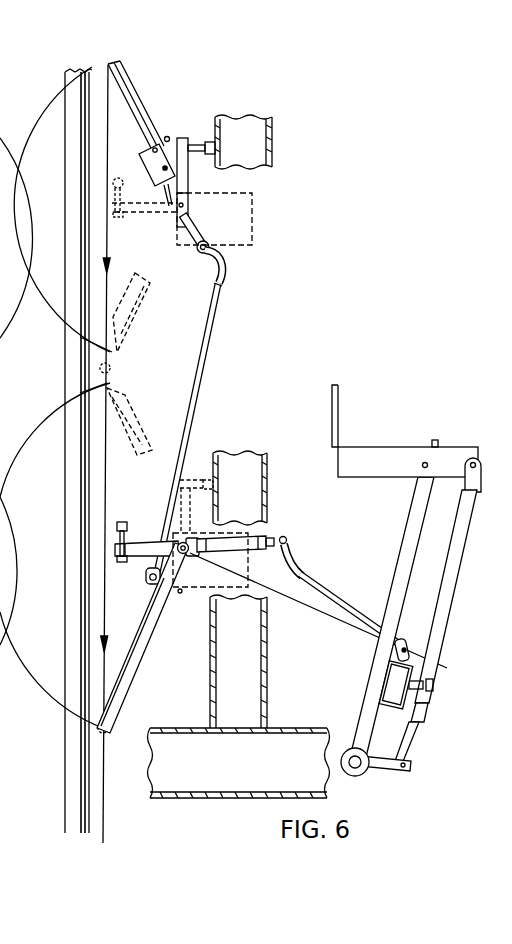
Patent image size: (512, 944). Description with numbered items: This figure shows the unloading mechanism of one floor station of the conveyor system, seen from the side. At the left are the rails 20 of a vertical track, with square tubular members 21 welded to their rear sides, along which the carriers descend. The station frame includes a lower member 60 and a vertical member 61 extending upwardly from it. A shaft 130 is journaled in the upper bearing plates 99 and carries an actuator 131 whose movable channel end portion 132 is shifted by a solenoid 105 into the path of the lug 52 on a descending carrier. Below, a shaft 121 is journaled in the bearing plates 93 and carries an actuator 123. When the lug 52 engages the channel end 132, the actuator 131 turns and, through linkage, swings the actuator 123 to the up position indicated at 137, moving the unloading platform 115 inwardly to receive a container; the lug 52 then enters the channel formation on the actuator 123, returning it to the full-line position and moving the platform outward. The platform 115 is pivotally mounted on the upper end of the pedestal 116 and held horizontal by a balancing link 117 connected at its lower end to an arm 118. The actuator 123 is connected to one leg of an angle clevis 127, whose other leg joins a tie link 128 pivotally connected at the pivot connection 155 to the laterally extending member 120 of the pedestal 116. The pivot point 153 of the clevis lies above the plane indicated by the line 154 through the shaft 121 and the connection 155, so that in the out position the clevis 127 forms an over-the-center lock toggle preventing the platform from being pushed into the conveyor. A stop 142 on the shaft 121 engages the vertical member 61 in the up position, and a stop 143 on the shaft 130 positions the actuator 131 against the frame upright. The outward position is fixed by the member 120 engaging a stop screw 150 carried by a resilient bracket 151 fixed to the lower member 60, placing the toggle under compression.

The rails 20 is at (82, 677).
The square tubular members 21 is at (77, 129).
The lug 52 is at (110, 372).
The lower member 60 is at (226, 776).
The vertical member 61 is at (227, 149).
The bearing plates 93 is at (253, 563).
The upper bearing plates 99 is at (252, 217).
The solenoid 105 is at (167, 136).
The unloading platform 115 is at (390, 445).
The pedestal 116 is at (402, 547).
The balancing link 117 is at (448, 573).
The arm 118 is at (385, 762).
The laterally extending member 120 is at (392, 705).
The shaft 121 is at (190, 540).
The actuator 123 is at (143, 665).
The angle clevis 127 is at (298, 563).
The tie link 128 is at (335, 596).
The shaft 130 is at (183, 203).
The actuator 131 is at (166, 181).
The movable channel end portion 132 is at (128, 100).
The up position 137 is at (142, 427).
The stop 142 is at (145, 543).
The stop 143 is at (182, 138).
The stop screws 150 is at (437, 687).
The bracket 151 is at (420, 702).
The pivot point 153 is at (287, 537).
The line 154 is at (332, 618).
The pivot connection 155 is at (407, 648).